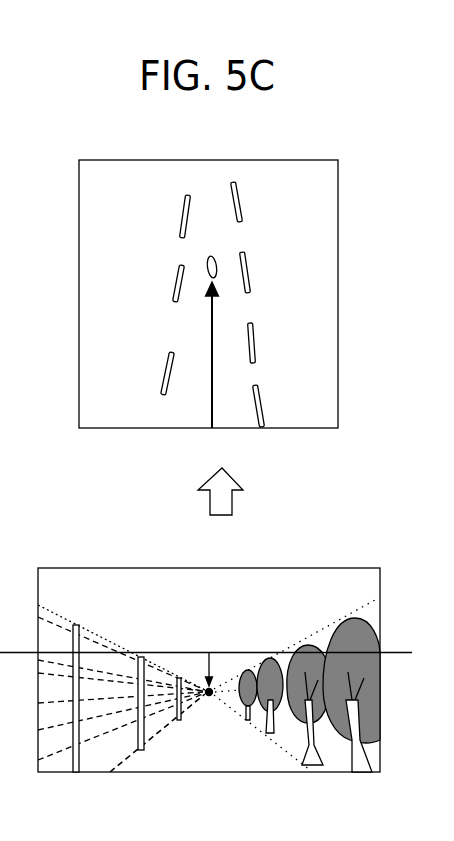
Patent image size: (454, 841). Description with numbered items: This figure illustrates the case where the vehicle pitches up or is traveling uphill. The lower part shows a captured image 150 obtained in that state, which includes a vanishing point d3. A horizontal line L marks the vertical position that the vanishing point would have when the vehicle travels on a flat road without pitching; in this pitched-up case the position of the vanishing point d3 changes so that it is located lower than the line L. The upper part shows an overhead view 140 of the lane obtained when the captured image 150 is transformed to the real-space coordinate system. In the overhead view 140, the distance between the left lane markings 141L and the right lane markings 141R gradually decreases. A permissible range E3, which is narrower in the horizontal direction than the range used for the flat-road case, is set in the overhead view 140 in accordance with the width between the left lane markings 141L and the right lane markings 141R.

The overhead view 140 is at (208, 160).
The left lane markings 141L is at (173, 288).
The right lane markings 141R is at (256, 346).
The permissible range E3 is at (217, 254).
The captured image 150 is at (207, 568).
The vanishing point d3 is at (209, 697).
The line L is at (214, 655).